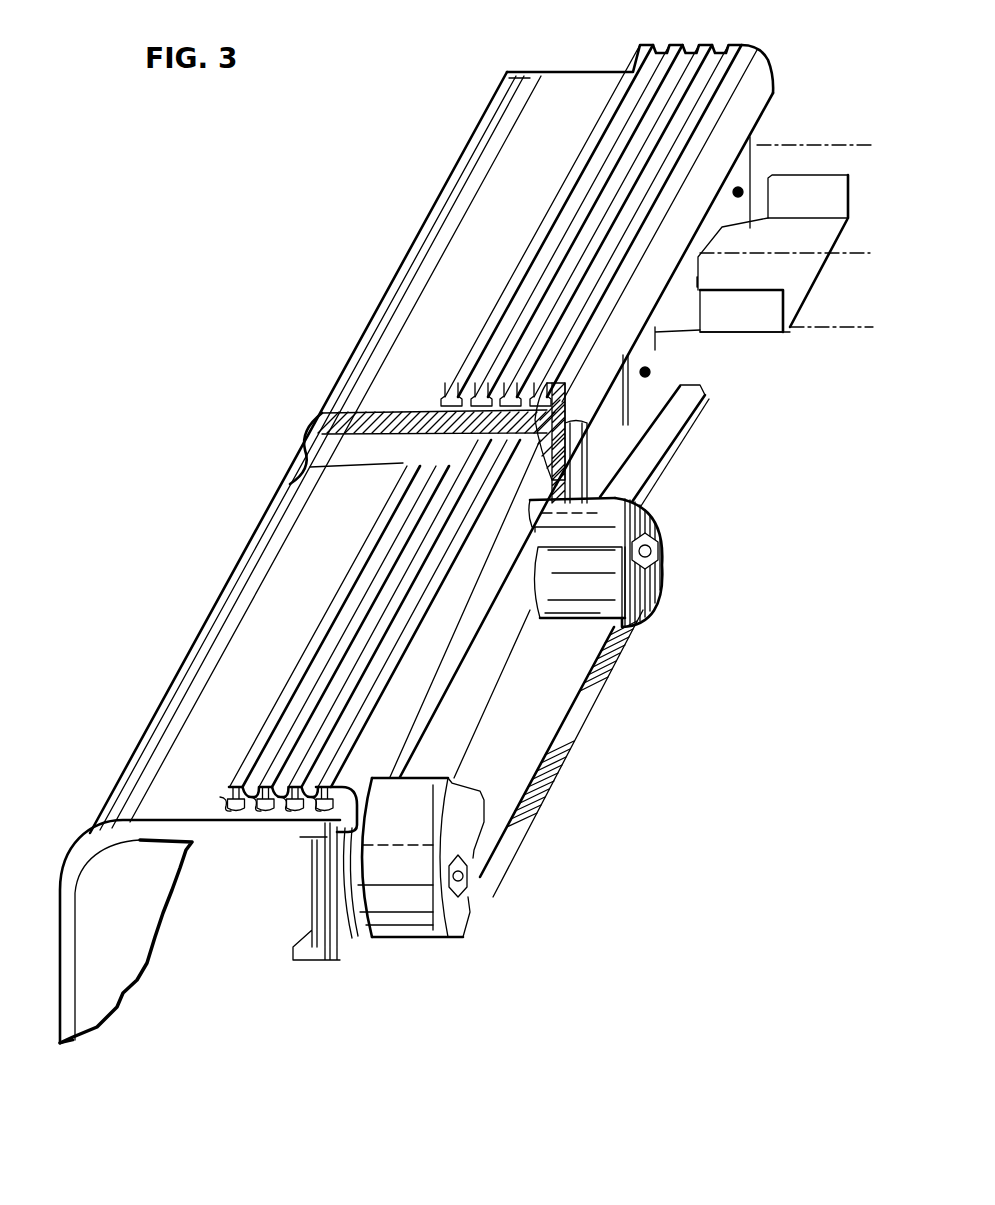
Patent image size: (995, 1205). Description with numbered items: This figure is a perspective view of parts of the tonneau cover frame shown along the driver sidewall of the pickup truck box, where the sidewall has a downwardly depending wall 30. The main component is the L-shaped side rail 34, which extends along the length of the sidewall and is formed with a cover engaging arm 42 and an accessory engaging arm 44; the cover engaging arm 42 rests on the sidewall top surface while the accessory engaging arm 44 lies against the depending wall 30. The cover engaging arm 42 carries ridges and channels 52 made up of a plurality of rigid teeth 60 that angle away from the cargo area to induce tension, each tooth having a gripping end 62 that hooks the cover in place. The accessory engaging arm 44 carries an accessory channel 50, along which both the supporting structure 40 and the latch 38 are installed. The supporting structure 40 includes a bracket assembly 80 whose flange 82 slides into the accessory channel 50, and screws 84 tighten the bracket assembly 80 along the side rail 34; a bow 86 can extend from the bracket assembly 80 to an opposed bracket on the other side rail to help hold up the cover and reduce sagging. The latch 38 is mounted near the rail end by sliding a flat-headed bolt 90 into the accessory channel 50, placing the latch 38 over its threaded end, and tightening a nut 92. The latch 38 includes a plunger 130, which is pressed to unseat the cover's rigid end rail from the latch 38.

The depending wall 30 is at (322, 903).
The side rail 34 is at (753, 78).
The latch 38 is at (572, 726).
The supporting structure 40 is at (735, 285).
The cover engaging arm 42 is at (232, 808).
The accessory engaging arm 44 is at (333, 862).
The accessory channel 50 is at (623, 437).
The ridges and channels 52 is at (327, 588).
The teeth 60 is at (462, 394).
The gripping ends 62 is at (672, 47).
The bracket assembly 80 is at (757, 318).
The flange 82 is at (665, 360).
The screws 84 is at (742, 188).
The bow 86 is at (833, 305).
The flat-headed bolt 90 is at (350, 917).
The nut 92 is at (470, 877).
The plunger 130 is at (585, 597).